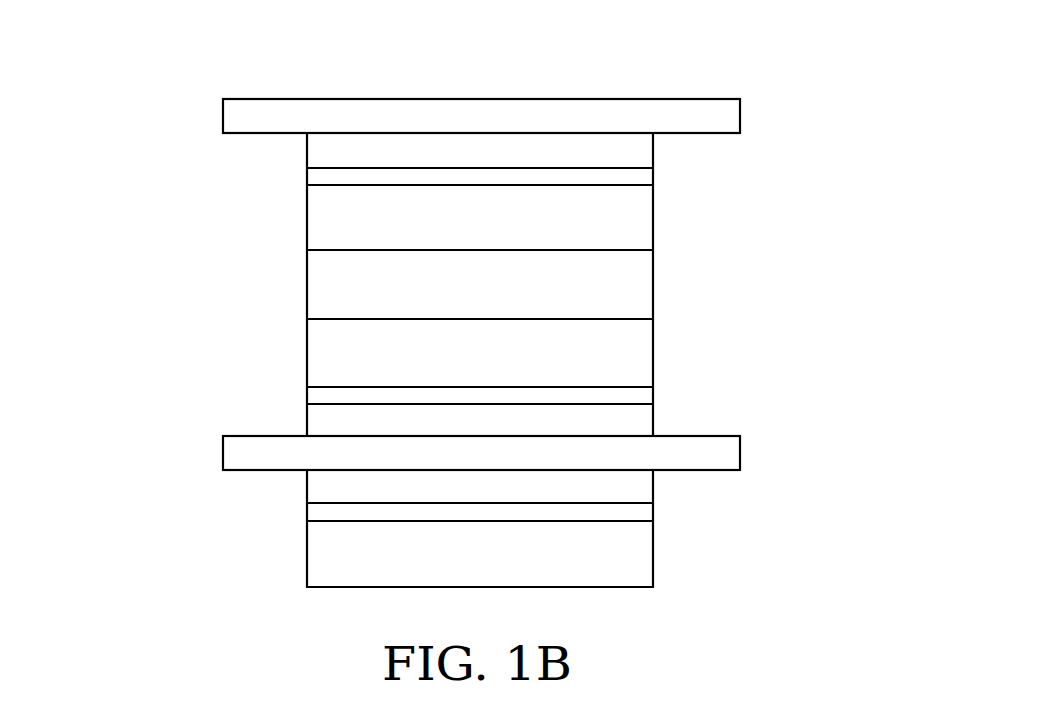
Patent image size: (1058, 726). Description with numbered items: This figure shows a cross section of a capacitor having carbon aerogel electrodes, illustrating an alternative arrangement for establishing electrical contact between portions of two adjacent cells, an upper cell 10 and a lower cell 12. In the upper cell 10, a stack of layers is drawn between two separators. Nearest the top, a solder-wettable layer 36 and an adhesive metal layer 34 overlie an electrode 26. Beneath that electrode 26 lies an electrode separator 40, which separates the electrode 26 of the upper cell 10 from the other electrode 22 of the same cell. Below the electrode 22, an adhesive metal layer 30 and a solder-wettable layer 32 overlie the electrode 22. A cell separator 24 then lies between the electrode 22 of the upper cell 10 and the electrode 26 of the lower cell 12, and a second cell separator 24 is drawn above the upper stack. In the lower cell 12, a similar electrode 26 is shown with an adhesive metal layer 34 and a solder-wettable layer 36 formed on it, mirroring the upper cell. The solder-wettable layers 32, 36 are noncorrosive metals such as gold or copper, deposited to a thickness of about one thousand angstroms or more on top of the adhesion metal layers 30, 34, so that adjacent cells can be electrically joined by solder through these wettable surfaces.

The upper cell 10 is at (171, 387).
The lower cell 12 is at (181, 556).
The electrode 22 is at (653, 350).
The cell separator 24 is at (418, 100).
The electrode 26 is at (653, 225).
The adhesive metal layer 30 is at (307, 390).
The solder-wettable layer 32 is at (653, 415).
The adhesive metal layer 34 is at (693, 540).
The solder-wettable layer 36 is at (653, 152).
The electrode separator 40 is at (307, 288).